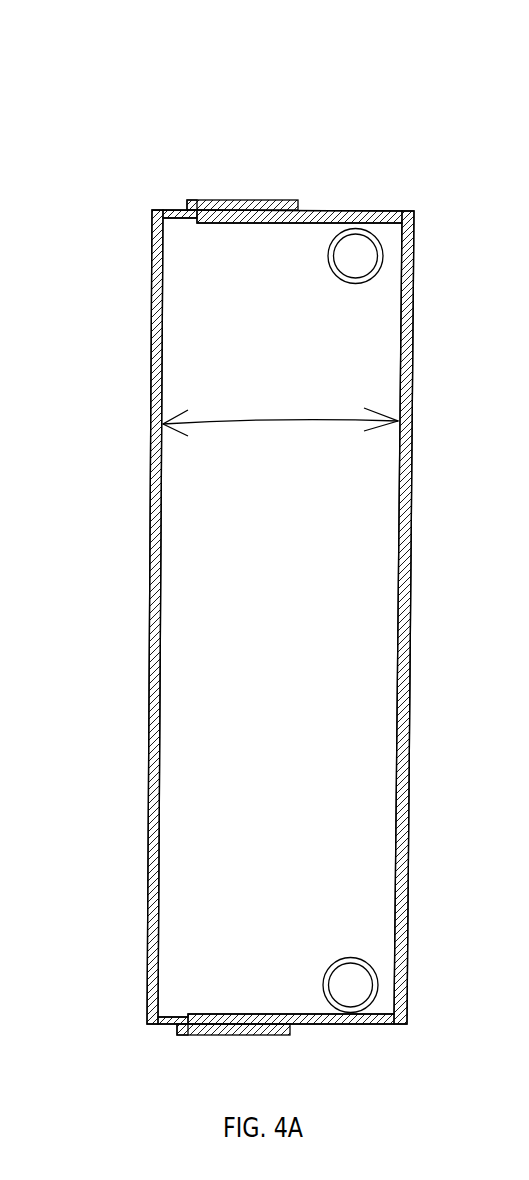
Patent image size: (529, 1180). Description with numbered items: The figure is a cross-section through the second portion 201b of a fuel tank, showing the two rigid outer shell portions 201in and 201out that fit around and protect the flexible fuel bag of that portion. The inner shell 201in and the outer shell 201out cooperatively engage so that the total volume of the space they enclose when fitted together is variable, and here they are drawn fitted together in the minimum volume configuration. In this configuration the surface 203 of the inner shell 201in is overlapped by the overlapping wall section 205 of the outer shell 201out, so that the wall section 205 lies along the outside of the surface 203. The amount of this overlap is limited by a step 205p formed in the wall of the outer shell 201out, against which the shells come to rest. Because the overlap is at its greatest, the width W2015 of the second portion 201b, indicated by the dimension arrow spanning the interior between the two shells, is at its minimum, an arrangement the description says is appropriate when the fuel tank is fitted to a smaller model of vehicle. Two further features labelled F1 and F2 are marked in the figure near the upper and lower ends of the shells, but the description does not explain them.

The second portion of the fuel tank 201b is at (413, 157).
The rigid outer shell portion 201in is at (397, 592).
The rigid outer shell portion 201out is at (162, 697).
The width of second portion W2015 is at (280, 405).
The surface 203 is at (297, 212).
The overlapping wall section 205 is at (243, 200).
The step 205p is at (190, 202).
The first fastening hole F1 is at (334, 275).
The second fastening hole F2 is at (348, 957).